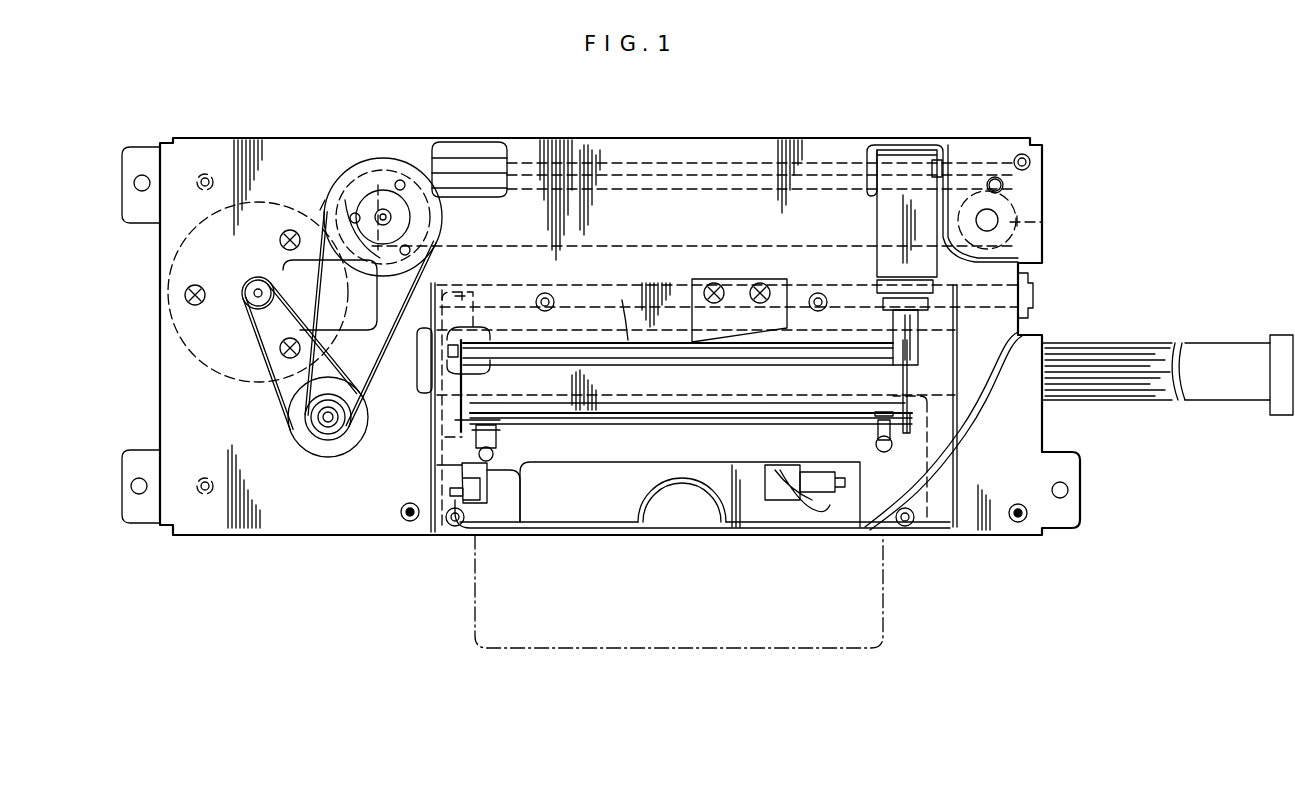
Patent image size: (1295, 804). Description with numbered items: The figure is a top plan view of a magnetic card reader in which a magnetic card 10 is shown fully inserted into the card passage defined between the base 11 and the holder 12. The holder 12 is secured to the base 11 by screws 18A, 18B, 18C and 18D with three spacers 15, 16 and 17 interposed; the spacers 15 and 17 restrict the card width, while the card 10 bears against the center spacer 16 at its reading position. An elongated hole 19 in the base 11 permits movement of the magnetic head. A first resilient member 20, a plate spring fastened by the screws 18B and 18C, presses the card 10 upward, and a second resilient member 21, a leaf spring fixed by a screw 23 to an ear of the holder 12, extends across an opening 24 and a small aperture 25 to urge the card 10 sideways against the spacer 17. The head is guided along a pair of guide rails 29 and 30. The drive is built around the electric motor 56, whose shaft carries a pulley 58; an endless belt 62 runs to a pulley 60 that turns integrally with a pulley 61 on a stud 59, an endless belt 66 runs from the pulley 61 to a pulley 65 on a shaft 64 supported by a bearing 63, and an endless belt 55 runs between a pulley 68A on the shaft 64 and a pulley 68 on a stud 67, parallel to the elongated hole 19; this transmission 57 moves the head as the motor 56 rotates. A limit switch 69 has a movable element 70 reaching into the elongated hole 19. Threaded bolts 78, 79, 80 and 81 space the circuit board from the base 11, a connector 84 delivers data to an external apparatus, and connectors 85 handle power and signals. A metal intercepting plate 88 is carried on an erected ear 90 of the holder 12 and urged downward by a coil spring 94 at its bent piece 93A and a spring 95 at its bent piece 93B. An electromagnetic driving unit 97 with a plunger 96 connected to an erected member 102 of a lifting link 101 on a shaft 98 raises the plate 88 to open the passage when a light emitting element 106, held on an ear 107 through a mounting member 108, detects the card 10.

The magnetic card 10 is at (888, 618).
The base 11 is at (226, 535).
The holder 12 is at (482, 530).
The spacer 15 is at (445, 437).
The center spacer 16 is at (592, 290).
The spacer 17 is at (920, 472).
The screw 18A is at (452, 526).
The screw 18B is at (546, 293).
The screw 18C is at (816, 293).
The screw 18D is at (908, 527).
The elongated hole 19 is at (432, 385).
The first resilient member 20 is at (452, 295).
The second resilient member 21 is at (437, 465).
The screw 23 is at (462, 482).
The opening 24 is at (600, 463).
The small aperture 25 is at (500, 487).
The guide rail 29 is at (1034, 295).
The guide rail 30 is at (837, 160).
The endless belt 55 is at (687, 243).
The electric motor 56 is at (166, 313).
The drive assembly 57 is at (313, 165).
The pulley 58 is at (258, 277).
The stud 59 is at (333, 430).
The pulley 60 is at (300, 434).
The pulley 61 is at (324, 430).
The endless belt 62 is at (278, 398).
The bearing 63 is at (377, 158).
The shaft 64 is at (383, 209).
The pulley 65 is at (412, 160).
The endless belt 66 is at (318, 232).
The stud 67 is at (990, 215).
The pulley 68 is at (1043, 222).
The pulley 68A is at (360, 185).
The limit switch 69 is at (732, 290).
The movable element 70 is at (708, 347).
The threaded bolt 78 is at (401, 512).
The threaded bolt 79 is at (1018, 504).
The threaded bolt 80 is at (448, 145).
The threaded bolt 81 is at (1022, 154).
The connector 84 is at (1280, 417).
The connectors 85 is at (1145, 402).
The intercepting plate 88 is at (660, 425).
The erected ear 90 is at (630, 410).
The bent piece 93A is at (500, 440).
The bent piece 93B is at (876, 436).
The coil spring 94 is at (493, 455).
The spring 95 is at (878, 450).
The plunger 96 is at (920, 342).
The electromagnetic driving unit 97 is at (880, 222).
The shaft 98 is at (628, 300).
The lifting link 101 is at (460, 412).
The erected member 102 is at (903, 374).
The light emitting element 106 is at (765, 478).
The ear 107 is at (830, 495).
The mounting member 108 is at (788, 500).